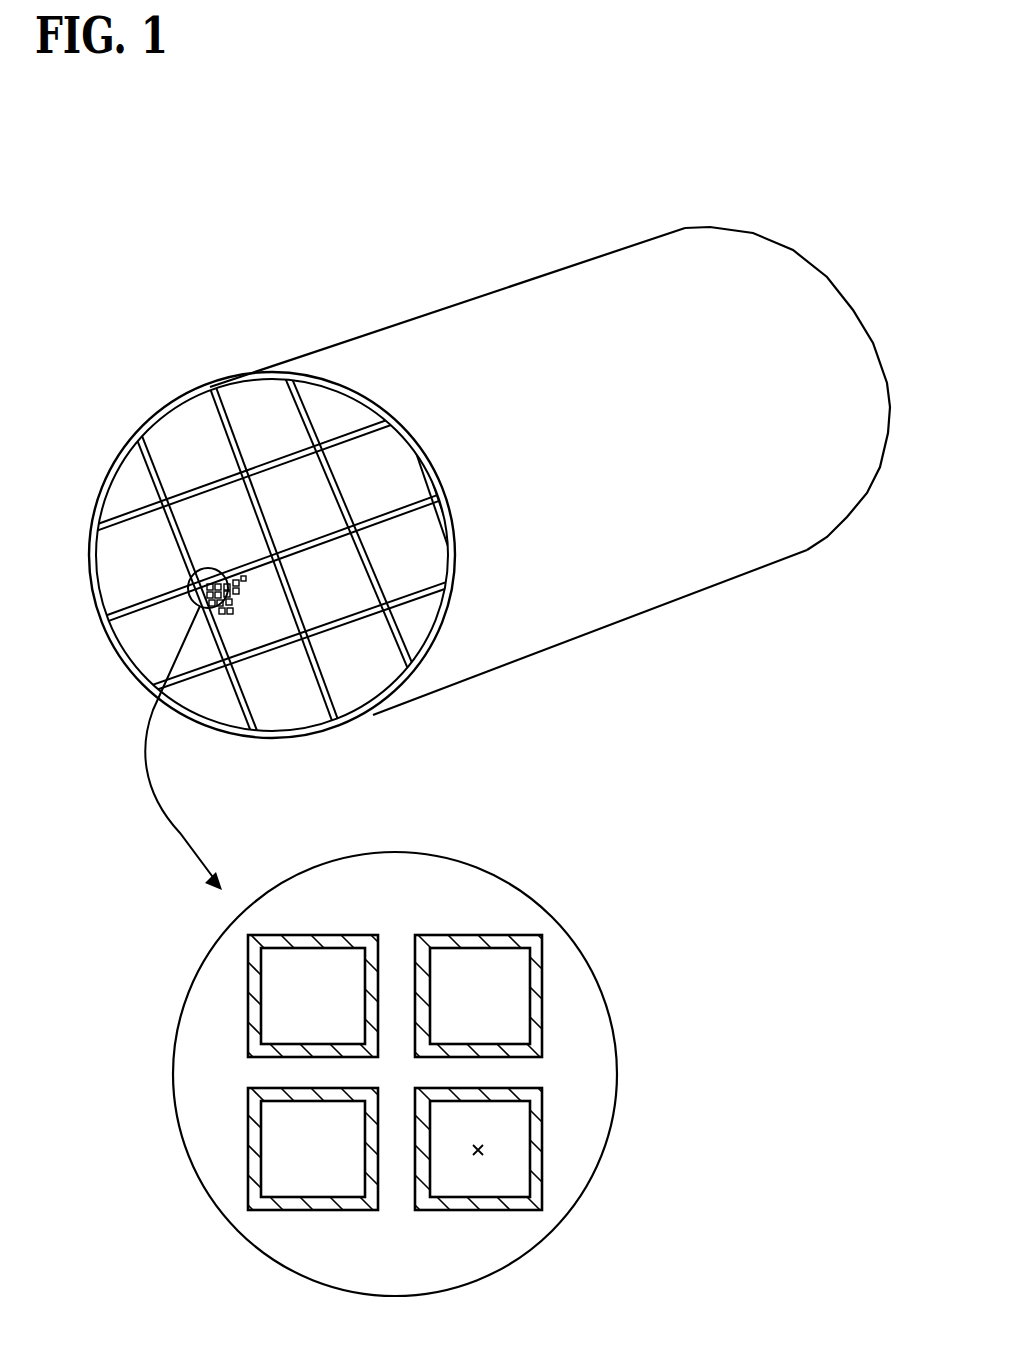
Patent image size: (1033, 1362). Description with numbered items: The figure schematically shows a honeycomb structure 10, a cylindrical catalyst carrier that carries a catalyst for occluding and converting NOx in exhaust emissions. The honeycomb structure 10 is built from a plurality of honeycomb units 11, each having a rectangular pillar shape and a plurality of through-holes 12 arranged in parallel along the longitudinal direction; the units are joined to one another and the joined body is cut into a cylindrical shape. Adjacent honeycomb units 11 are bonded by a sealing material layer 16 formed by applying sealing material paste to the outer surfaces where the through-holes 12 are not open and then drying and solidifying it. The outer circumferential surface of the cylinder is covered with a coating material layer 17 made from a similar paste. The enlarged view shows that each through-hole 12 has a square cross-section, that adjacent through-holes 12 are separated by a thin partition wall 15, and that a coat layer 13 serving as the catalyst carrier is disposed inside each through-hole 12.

The honeycomb structure 10 is at (433, 300).
The honeycomb unit 11 is at (268, 623).
The through-hole 12 is at (218, 608).
The coat layer 13 is at (538, 1138).
The partition wall 15 is at (398, 982).
The sealing material layer 16 is at (400, 643).
The coating material layer 17 is at (162, 415).